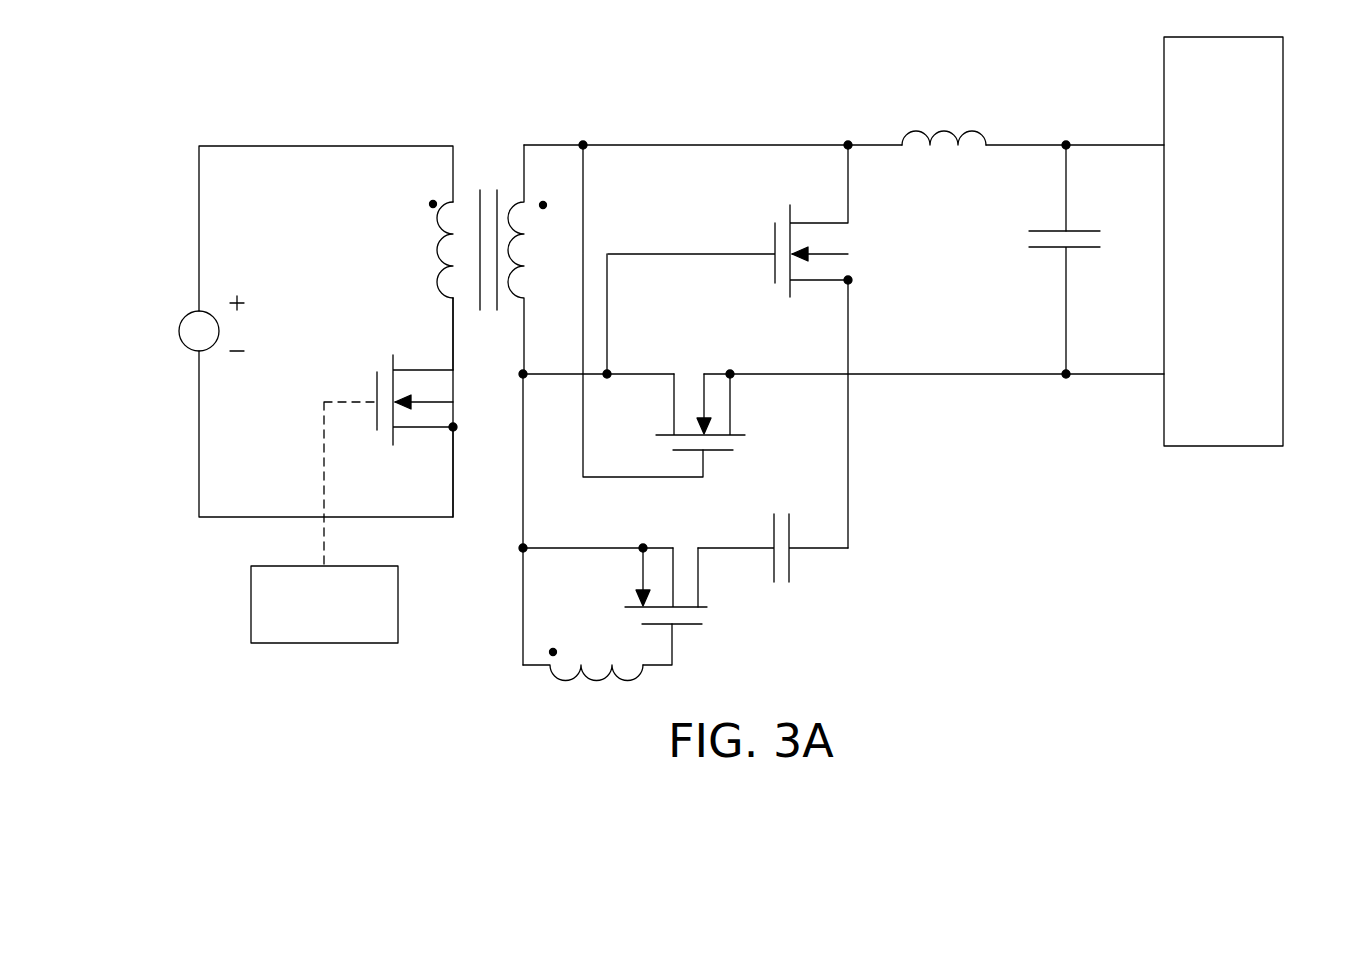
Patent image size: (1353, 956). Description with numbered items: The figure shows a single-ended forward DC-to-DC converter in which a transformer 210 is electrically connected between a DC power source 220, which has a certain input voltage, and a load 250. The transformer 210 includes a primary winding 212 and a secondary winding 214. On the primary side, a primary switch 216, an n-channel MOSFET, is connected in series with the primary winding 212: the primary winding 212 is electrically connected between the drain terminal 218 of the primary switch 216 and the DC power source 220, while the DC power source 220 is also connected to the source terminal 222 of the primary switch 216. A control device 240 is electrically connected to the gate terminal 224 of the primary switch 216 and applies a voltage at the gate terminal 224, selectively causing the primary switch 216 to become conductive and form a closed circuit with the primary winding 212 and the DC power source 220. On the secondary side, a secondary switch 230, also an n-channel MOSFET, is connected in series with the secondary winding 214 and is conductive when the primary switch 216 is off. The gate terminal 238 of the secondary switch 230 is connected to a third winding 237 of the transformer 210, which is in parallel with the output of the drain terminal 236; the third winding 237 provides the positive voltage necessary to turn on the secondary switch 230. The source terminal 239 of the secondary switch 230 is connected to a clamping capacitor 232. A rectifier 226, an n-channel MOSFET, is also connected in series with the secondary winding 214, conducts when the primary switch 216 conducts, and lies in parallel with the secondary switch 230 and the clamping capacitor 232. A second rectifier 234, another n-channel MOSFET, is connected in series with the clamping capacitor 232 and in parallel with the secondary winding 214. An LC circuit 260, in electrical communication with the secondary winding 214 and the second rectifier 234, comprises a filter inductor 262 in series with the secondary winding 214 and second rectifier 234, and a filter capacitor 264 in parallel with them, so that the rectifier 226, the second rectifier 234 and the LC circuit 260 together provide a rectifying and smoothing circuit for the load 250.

The transformer 210 is at (463, 140).
The primary winding 212 is at (452, 188).
The secondary winding 214 is at (557, 184).
The primary switch 216 is at (376, 322).
The drain terminal 218 is at (425, 370).
The DC power source 220 is at (192, 311).
The source terminal 222 is at (418, 430).
The gate terminal 224 is at (354, 403).
The rectifier 226 is at (722, 462).
The secondary switch 230 is at (688, 652).
The clamping capacitor 232 is at (792, 556).
The second rectifier 234 is at (868, 280).
The drain terminal 236 is at (624, 547).
The third winding 237 is at (628, 683).
The gate terminal 238 is at (663, 633).
The source terminal 239 is at (728, 588).
The control device 240 is at (373, 565).
The load 250 is at (1283, 143).
The LC circuit 260 is at (1053, 115).
The filter inductor 262 is at (902, 140).
The filter capacitor 264 is at (1067, 231).